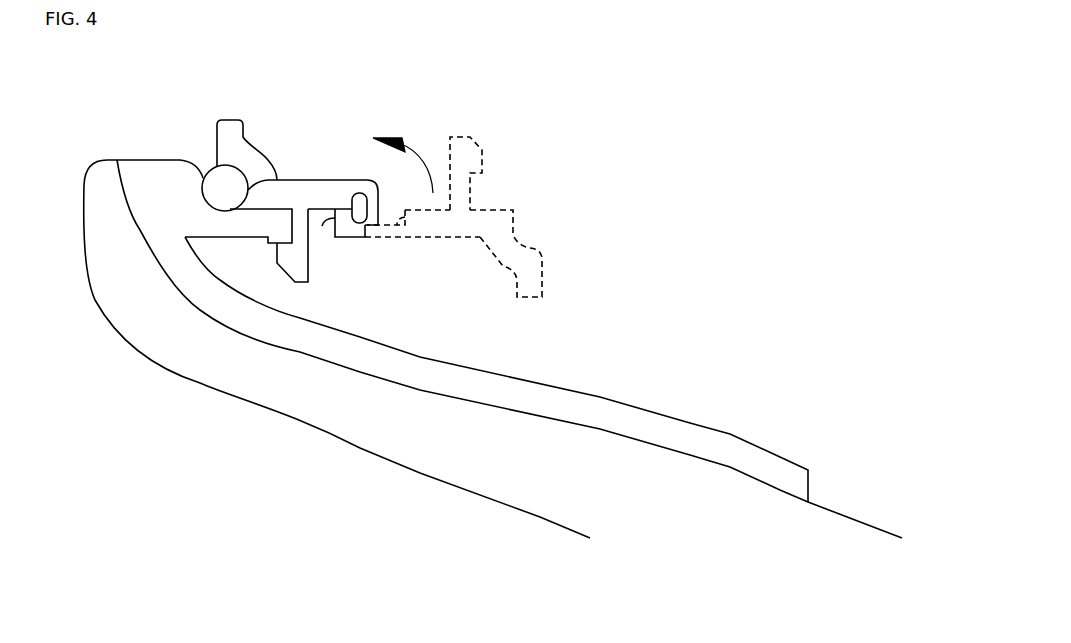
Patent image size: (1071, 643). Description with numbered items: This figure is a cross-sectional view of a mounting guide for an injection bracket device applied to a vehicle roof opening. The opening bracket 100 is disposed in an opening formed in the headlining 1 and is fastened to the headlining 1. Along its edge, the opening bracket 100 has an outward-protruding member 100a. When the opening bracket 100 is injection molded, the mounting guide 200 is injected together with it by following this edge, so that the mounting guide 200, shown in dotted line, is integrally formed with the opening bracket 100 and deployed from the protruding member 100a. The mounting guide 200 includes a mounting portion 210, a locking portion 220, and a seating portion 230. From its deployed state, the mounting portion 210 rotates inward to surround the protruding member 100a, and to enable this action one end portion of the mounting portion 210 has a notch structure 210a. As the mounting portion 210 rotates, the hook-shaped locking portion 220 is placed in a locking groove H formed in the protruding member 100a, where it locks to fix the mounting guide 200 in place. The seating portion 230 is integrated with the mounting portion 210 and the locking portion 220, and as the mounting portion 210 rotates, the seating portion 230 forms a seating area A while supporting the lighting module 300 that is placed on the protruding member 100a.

The headlining 1 is at (290, 422).
The opening bracket 100 is at (717, 432).
The protruding member 100a is at (255, 220).
The mounting guide 200 is at (547, 216).
The mounting portion 210 is at (509, 234).
The notch structure 210a is at (397, 220).
The locking portion 220 is at (475, 142).
The seating portion 230 is at (567, 256).
The lighting module 300 is at (210, 167).
The seating area A is at (520, 247).
The locking groove H is at (322, 226).